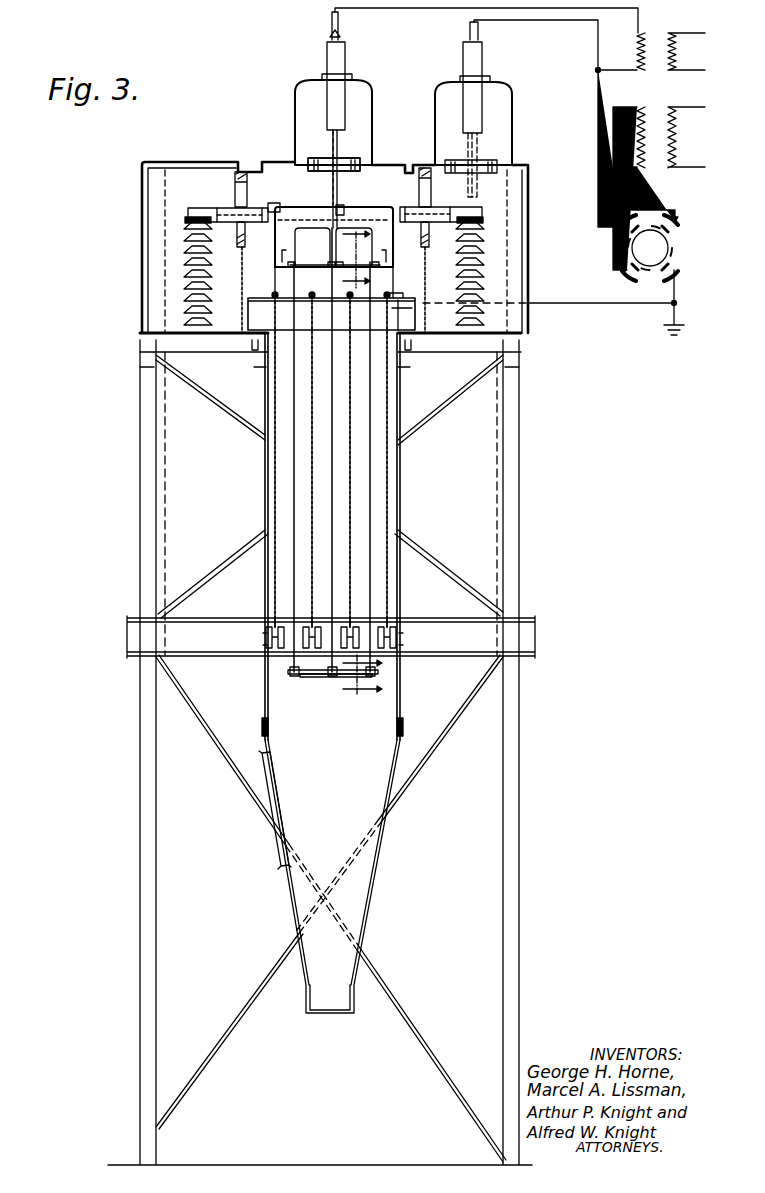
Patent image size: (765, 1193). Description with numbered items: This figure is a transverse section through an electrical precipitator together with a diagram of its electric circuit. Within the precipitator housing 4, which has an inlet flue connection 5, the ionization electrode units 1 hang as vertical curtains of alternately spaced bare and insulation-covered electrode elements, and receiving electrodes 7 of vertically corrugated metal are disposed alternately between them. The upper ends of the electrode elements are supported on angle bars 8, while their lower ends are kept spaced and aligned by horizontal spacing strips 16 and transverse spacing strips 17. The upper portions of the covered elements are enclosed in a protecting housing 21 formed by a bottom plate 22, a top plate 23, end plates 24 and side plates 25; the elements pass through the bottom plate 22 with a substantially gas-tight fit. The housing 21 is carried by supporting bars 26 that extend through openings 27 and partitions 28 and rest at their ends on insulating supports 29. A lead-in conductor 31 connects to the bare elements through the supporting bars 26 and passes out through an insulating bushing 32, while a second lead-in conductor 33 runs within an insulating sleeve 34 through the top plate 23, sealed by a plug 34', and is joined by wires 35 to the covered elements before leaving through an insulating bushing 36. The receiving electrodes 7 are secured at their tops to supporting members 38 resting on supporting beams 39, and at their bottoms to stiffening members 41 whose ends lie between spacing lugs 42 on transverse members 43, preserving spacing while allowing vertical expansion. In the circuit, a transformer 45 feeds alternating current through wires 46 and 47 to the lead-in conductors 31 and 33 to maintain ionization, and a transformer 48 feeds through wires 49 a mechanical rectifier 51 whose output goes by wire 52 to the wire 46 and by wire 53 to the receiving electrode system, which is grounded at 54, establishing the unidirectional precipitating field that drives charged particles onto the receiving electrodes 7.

The ionization electrode units 1 is at (338, 426).
The precipitator housing 4 is at (424, 523).
The inlet flue connection 5 is at (358, 676).
The receiving electrodes 7 is at (312, 485).
The angle bars 8 is at (290, 266).
The horizontal spacing strips 16 is at (290, 669).
The transverse spacing strips 17 is at (306, 678).
The protecting housing 21 is at (294, 205).
The bottom plate 22 is at (390, 270).
The top plate 23 is at (334, 205).
The end plates 24 is at (288, 237).
The side plates 25 is at (281, 253).
The supporting bars 26 is at (205, 208).
The openings 27 is at (247, 200).
The partitions 28 is at (241, 268).
The insulating supports 29 is at (185, 243).
The lead-in conductor 31 is at (480, 198).
The insulating bushing 32 is at (485, 88).
The second lead-in conductor 33 is at (343, 190).
The insulating sleeve 34 is at (316, 179).
The plug 34' is at (351, 203).
The wires 35 is at (315, 226).
The insulating bushing 36 is at (340, 84).
The supporting members 38 is at (402, 315).
The supporting beams 39 is at (331, 314).
The stiffening members 41 is at (266, 645).
The spacing lugs 42 is at (400, 644).
The transverse members 43 is at (283, 626).
The transformer 45 is at (657, 38).
The wire 46 is at (572, 21).
The wire 47 is at (445, 8).
The transformer 48 is at (656, 167).
The wires 49 is at (613, 193).
The mechanical rectifier 51 is at (652, 249).
The wire 52 is at (597, 124).
The wire 53 is at (580, 305).
The ground 54 is at (382, 787).